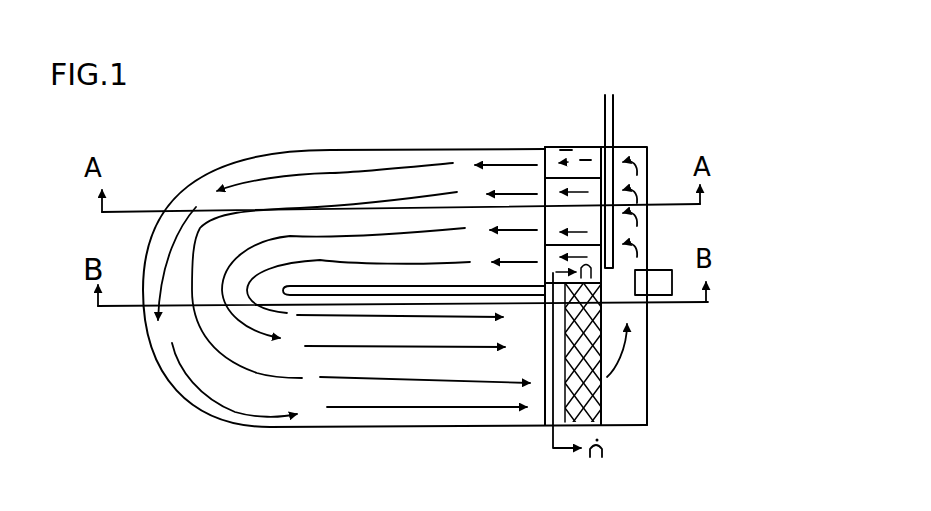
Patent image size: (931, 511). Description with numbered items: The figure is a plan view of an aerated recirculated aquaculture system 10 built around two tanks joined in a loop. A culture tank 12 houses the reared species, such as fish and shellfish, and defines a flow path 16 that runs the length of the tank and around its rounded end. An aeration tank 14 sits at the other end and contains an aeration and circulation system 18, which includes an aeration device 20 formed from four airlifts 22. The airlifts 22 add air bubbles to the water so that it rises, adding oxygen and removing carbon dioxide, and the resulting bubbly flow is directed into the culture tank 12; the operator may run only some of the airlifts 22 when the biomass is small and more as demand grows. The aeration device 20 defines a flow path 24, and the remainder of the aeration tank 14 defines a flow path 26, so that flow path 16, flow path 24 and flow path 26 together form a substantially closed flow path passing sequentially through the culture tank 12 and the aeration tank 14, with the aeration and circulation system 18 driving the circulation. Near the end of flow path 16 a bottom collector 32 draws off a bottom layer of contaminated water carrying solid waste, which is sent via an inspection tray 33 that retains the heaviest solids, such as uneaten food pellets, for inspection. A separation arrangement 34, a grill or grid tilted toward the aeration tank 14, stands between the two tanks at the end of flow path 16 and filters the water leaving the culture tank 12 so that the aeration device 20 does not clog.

The aerated recirculated aquaculture system 10 is at (388, 116).
The culture tank 12 is at (293, 152).
The aeration tank 14 is at (647, 407).
The flow path 16 is at (267, 173).
The aeration and circulation system 18 is at (568, 145).
The aeration device 20 is at (561, 146).
The airlifts 22 is at (683, 345).
The flow path 24 is at (583, 158).
The flow path 26 is at (633, 350).
The bottom collector 32 is at (545, 427).
The inspection tray 33 is at (672, 290).
The separation arrangement 34 is at (590, 427).